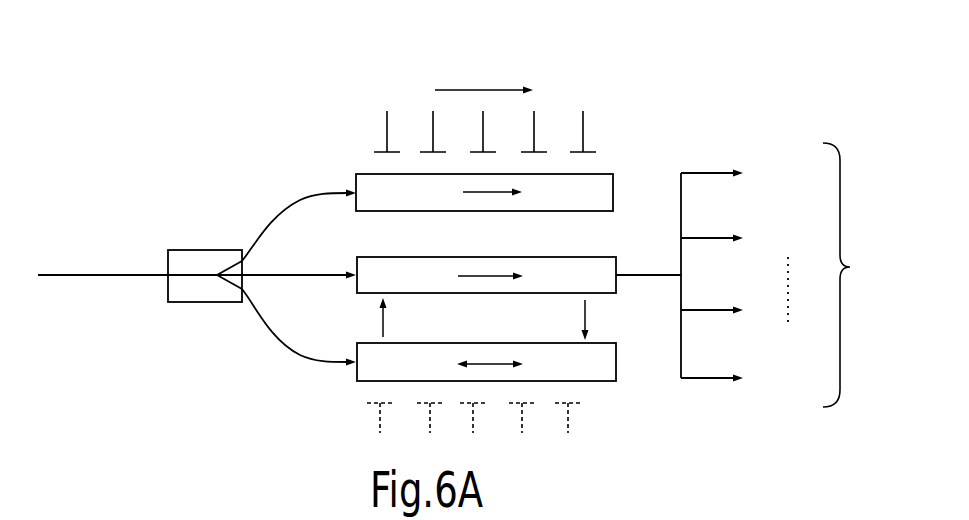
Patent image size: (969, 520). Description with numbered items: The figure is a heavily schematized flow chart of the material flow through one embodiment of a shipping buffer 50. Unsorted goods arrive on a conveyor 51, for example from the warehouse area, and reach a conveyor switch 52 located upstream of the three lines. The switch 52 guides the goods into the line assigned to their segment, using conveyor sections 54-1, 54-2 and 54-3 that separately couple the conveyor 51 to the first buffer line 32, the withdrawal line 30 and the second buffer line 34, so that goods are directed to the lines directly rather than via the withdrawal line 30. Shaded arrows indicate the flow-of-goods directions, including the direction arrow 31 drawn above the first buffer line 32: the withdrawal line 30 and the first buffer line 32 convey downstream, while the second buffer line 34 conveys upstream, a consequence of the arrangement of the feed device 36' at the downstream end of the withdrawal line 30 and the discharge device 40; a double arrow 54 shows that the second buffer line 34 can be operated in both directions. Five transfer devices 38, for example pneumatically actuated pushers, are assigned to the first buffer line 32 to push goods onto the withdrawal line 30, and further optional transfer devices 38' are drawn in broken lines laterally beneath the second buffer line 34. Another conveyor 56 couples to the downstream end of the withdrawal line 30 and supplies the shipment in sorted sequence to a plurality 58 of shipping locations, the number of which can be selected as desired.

The shipping buffer 50 is at (226, 150).
The conveyor 51 is at (65, 274).
The conveyor switch 52 is at (207, 303).
The conveyor section 54-1 is at (293, 200).
The conveyor section 54-2 is at (278, 274).
The conveyor section 54-3 is at (292, 352).
The first buffer line 32 is at (401, 205).
The withdrawal line 30 is at (403, 289).
The second buffer line 34 is at (403, 377).
The double arrow 54 is at (488, 362).
The light propagation direction 31 is at (473, 89).
The transfer devices 38 is at (517, 99).
The optional transfer devices 38' is at (503, 436).
The discharge device 40 is at (387, 320).
The feed device 36' is at (623, 316).
The conveyor 56 is at (632, 274).
The plurality of shipping locations 58 is at (816, 275).